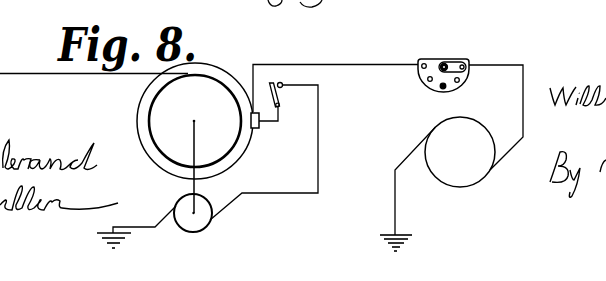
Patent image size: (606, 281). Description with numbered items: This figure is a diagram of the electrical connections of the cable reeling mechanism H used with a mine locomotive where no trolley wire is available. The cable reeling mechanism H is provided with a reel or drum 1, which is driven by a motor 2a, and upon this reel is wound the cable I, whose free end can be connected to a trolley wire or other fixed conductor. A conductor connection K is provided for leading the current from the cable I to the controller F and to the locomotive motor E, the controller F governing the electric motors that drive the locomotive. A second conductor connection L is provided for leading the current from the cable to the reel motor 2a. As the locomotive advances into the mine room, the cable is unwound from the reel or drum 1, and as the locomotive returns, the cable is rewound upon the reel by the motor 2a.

The cable I is at (73, 76).
The reel or drum 1 is at (150, 106).
The cable reeling mechanism H is at (225, 56).
The conductor connection K is at (338, 64).
The second conductor connection L is at (318, 140).
The controller F is at (433, 59).
The electric motor E is at (477, 171).
The motor 2a is at (200, 216).